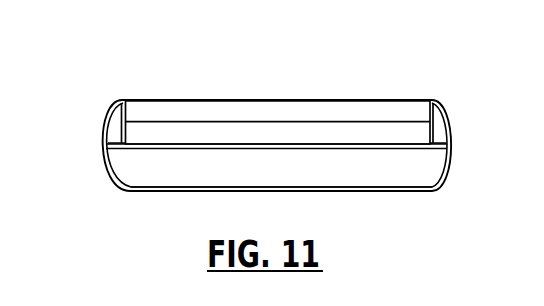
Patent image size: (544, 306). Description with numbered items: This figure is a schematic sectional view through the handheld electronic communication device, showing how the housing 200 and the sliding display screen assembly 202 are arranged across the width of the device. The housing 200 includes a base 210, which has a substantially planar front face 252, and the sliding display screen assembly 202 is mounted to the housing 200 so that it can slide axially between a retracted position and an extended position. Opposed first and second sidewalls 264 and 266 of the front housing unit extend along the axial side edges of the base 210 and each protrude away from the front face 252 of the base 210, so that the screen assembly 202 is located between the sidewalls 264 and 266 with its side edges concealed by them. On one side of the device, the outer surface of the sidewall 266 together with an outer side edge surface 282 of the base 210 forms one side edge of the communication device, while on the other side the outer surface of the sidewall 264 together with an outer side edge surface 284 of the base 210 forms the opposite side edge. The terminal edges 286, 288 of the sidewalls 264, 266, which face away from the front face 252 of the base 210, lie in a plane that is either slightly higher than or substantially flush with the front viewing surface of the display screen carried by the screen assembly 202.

The housing 200 is at (120, 183).
The sliding display screen assembly 202 is at (289, 108).
The base 210 is at (412, 170).
The front face 252 is at (192, 129).
The first sidewall 264 is at (447, 111).
The second sidewall 266 is at (105, 122).
The outer side edge surface 282 is at (105, 152).
The outer side edge surface 284 is at (452, 150).
The terminal edge 286 is at (432, 103).
The terminal edge 288 is at (119, 103).